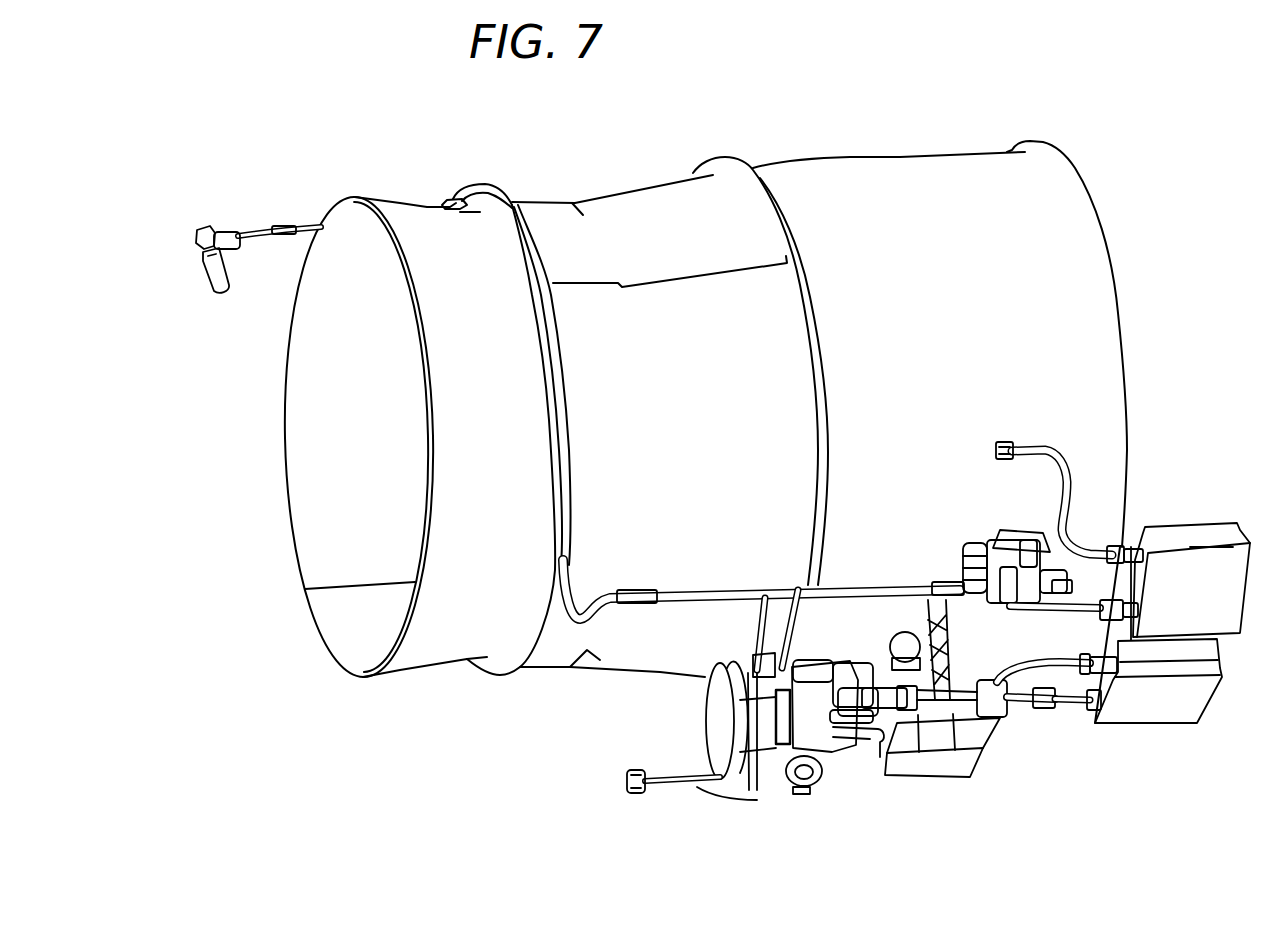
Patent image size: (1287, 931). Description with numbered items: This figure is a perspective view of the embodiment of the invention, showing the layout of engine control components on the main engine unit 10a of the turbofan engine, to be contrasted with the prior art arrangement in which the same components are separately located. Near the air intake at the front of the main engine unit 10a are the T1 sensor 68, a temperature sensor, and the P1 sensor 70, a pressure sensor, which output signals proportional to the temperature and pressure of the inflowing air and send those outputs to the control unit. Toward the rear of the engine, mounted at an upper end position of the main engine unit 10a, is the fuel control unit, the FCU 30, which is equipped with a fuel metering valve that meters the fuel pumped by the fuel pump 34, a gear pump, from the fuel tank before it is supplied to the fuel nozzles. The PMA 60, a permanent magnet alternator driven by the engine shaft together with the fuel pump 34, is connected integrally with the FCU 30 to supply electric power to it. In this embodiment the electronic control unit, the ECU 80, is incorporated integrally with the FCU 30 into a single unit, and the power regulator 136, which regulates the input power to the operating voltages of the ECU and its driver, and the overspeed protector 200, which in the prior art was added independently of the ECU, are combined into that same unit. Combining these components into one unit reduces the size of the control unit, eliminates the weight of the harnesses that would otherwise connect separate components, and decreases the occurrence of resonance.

The main engine unit 10a is at (911, 153).
The T1 sensor 68 is at (252, 213).
The P1 sensor 70 is at (205, 228).
The PMA 60 is at (724, 804).
The fuel pump 34 is at (800, 805).
The FCU 30 is at (933, 658).
The ECU 80 is at (933, 658).
The power regulator 136 is at (933, 658).
The overspeed protector 200 is at (929, 789).